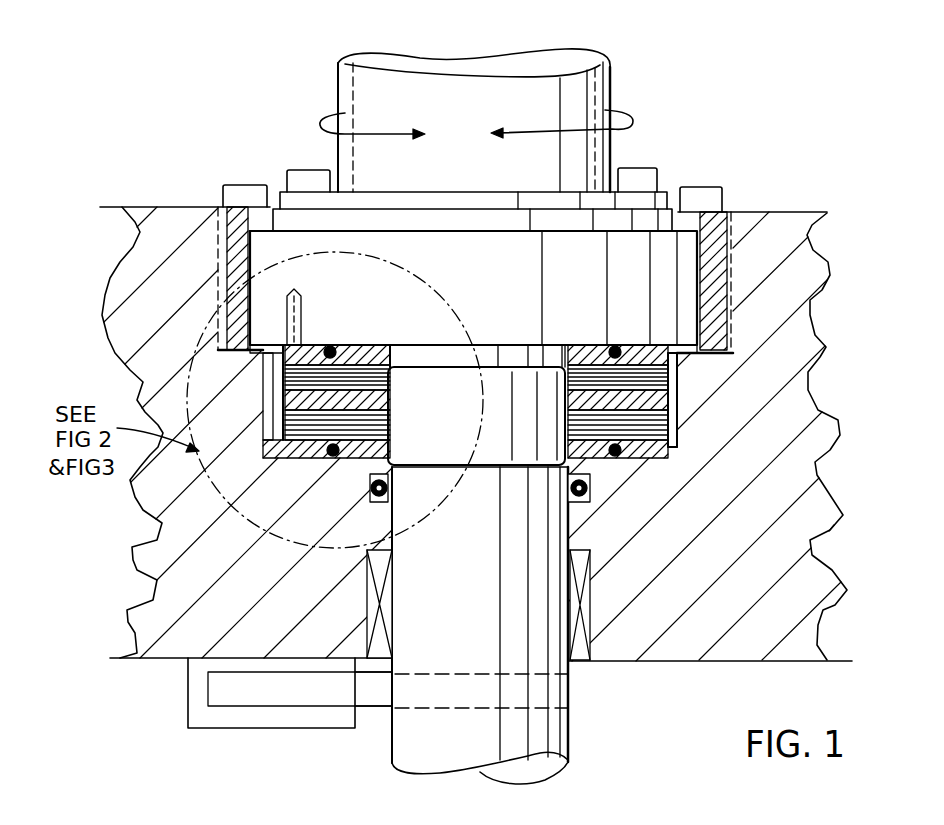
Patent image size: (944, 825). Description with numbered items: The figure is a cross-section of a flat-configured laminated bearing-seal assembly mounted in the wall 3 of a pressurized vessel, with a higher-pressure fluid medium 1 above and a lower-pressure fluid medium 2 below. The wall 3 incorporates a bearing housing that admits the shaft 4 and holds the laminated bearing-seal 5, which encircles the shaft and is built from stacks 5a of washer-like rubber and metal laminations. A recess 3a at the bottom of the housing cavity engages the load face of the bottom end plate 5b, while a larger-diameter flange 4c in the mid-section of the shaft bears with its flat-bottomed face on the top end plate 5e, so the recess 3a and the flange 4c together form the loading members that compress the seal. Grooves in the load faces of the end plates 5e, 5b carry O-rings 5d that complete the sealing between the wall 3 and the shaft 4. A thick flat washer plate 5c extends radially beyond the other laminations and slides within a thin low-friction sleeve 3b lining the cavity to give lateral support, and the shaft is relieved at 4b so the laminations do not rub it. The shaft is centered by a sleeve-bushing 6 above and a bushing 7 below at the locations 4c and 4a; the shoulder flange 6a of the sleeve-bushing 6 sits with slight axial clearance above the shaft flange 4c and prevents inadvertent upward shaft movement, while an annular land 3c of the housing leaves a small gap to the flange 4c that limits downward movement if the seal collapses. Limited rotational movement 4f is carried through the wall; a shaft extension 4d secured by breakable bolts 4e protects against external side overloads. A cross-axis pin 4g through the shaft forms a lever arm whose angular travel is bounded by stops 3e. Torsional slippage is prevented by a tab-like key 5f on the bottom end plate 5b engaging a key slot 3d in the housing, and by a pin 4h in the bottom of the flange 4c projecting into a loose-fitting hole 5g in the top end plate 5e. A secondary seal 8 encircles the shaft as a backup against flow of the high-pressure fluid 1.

The higher-pressure fluid medium 1 is at (160, 84).
The lower-pressure fluid medium 2 is at (170, 781).
The wall 3 is at (250, 606).
The recess 3a is at (673, 417).
The low-friction sleeve 3b is at (675, 437).
The annular land 3c is at (693, 357).
The key slot 3d is at (263, 393).
The stop 3e is at (188, 708).
The shaft 4 is at (572, 727).
The shaft location below bearing-seal 4a is at (482, 576).
The relieved shaft portion 4b is at (565, 385).
The shaft flange 4c is at (490, 304).
The shaft extension 4d is at (612, 88).
The breakable bolts 4e is at (652, 168).
The rotational movement 4f is at (476, 131).
The cross-axis pin 4g is at (376, 710).
The pin 4h is at (300, 300).
The laminated bearing-seal 5 is at (662, 468).
The stacks of laminations 5a is at (393, 380).
The bottom end plate 5b is at (278, 499).
The flat washer plate 5c is at (391, 402).
The O-rings 5d is at (617, 352).
The top end plate 5e is at (647, 345).
The tab-like key 5f is at (263, 454).
The hole 5g is at (300, 347).
The sleeve-bushing 6 is at (250, 260).
The shoulder flange 6a is at (252, 248).
The bushing 7 is at (393, 615).
The secondary seal 8 is at (590, 492).